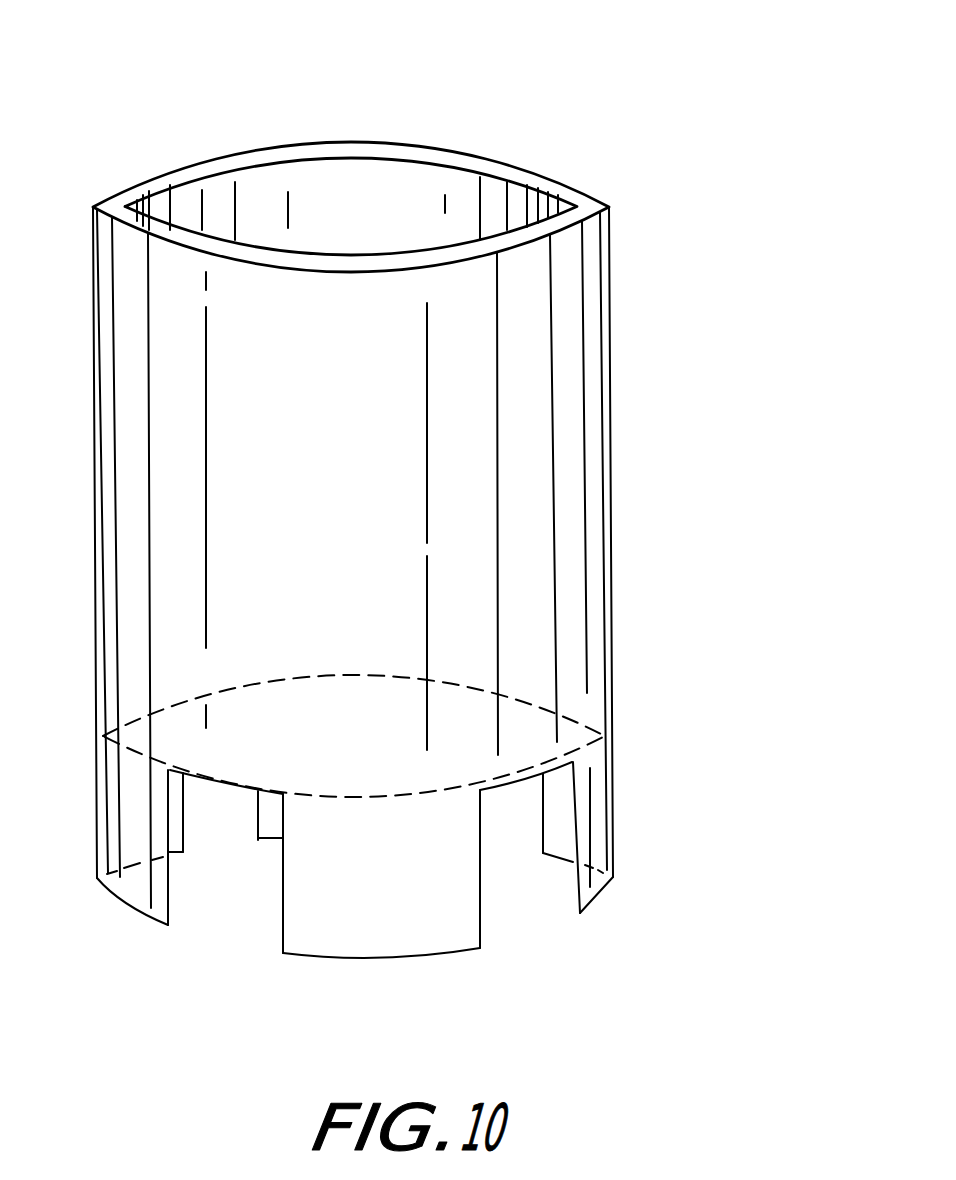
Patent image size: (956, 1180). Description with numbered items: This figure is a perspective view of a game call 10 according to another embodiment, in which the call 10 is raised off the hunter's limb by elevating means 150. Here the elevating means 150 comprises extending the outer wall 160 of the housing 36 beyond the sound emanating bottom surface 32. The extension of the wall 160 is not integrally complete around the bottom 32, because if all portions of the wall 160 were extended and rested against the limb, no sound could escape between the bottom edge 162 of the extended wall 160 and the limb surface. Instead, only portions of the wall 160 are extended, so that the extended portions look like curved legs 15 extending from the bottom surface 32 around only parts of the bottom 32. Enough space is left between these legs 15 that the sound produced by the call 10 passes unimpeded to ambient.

The call 10 is at (568, 92).
The housing 36 is at (585, 408).
The outer wall 160 is at (347, 463).
The bottom surface 32 is at (567, 727).
The curved legs 15 is at (102, 848).
The bottom edge 162 is at (598, 897).
The elevating means 150 is at (500, 971).